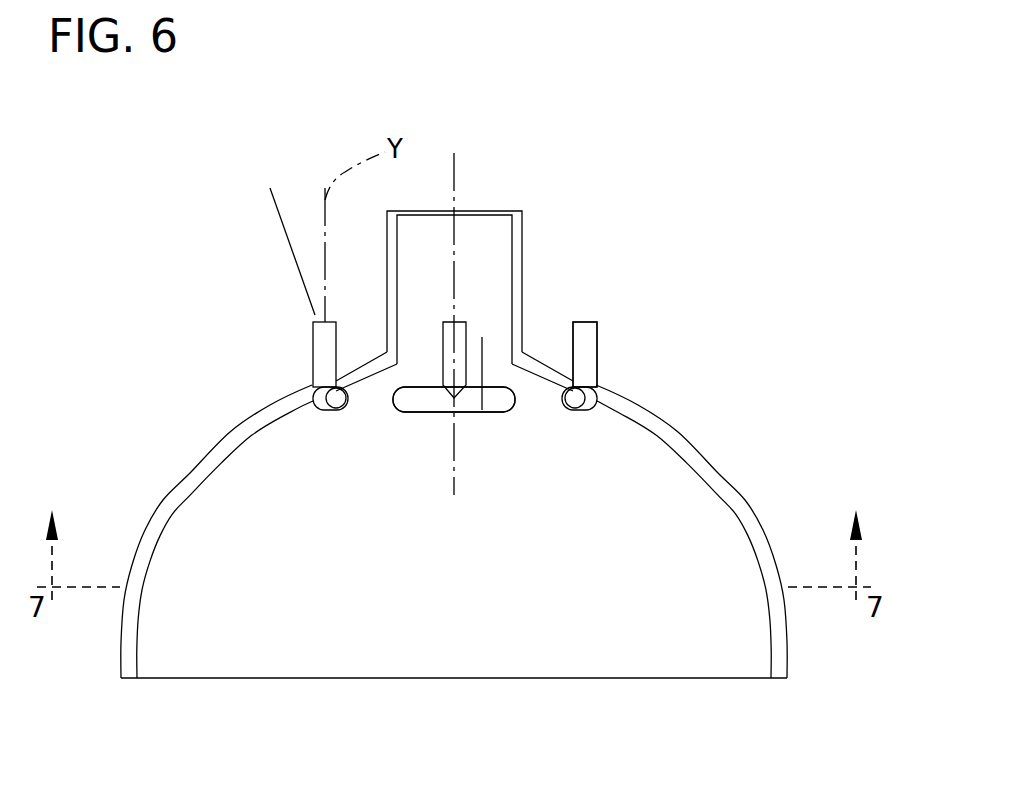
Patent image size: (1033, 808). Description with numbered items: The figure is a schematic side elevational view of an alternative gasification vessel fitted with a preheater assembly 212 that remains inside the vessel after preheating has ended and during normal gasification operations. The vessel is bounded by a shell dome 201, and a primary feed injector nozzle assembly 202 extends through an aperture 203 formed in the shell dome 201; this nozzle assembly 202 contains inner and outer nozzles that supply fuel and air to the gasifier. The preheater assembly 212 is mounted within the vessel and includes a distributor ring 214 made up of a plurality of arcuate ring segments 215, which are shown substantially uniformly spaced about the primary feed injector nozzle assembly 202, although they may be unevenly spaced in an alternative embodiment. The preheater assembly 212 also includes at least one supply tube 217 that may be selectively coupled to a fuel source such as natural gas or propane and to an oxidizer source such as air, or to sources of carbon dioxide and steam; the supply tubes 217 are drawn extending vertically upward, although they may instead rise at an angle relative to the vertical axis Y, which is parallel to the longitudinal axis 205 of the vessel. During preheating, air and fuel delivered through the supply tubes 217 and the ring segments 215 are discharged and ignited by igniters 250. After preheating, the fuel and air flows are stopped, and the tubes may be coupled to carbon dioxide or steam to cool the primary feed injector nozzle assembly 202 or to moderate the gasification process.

The shell dome 201 is at (210, 447).
The primary feed injector nozzle assembly 202 is at (540, 180).
The aperture 203 is at (522, 258).
The longitudinal axis 205 is at (453, 475).
The preheater assembly 212 is at (480, 449).
The distributor ring 214 is at (622, 315).
The ring segments 215 is at (325, 393).
The supply tube 217 is at (322, 342).
The igniters 250 is at (483, 347).